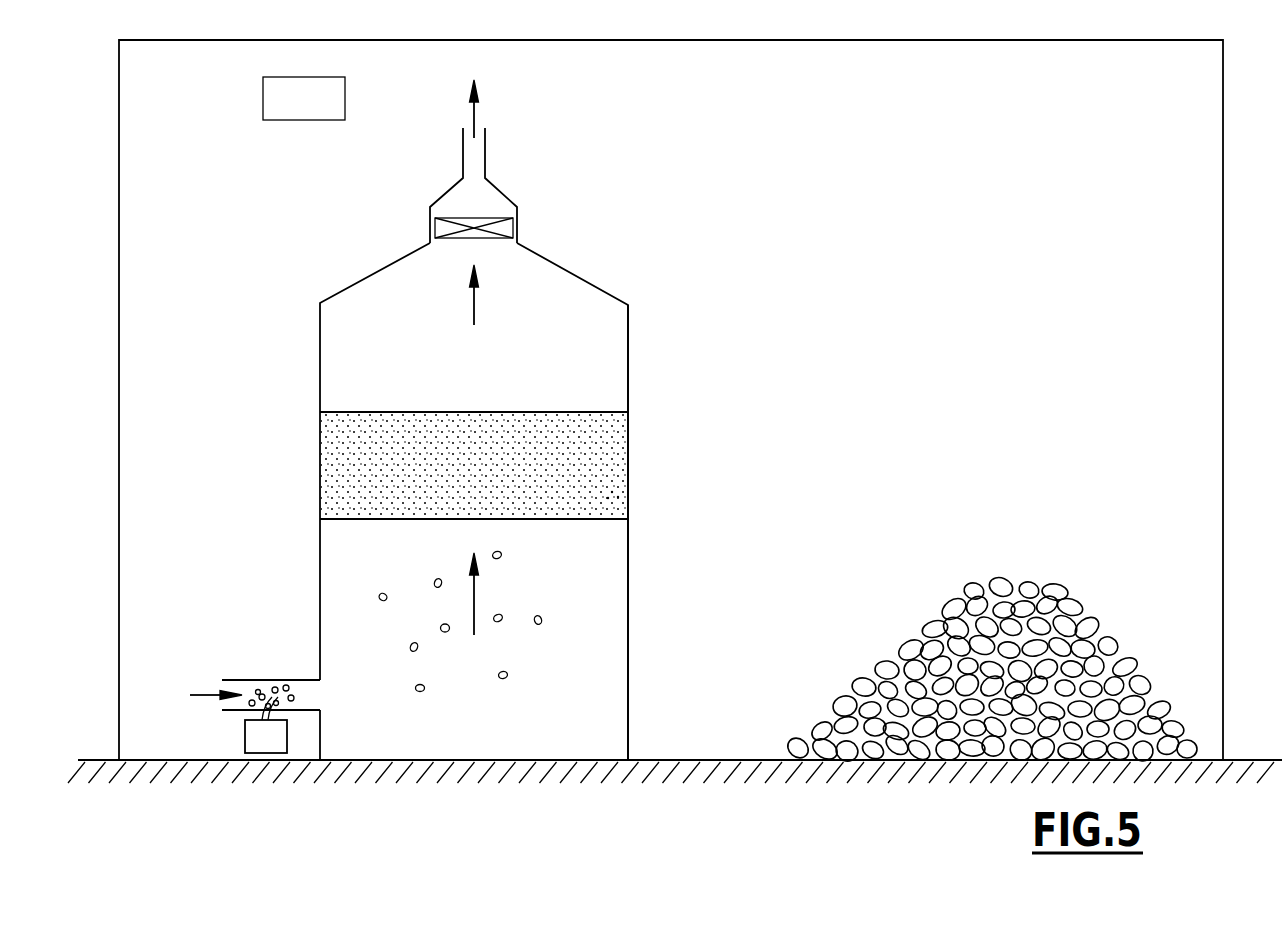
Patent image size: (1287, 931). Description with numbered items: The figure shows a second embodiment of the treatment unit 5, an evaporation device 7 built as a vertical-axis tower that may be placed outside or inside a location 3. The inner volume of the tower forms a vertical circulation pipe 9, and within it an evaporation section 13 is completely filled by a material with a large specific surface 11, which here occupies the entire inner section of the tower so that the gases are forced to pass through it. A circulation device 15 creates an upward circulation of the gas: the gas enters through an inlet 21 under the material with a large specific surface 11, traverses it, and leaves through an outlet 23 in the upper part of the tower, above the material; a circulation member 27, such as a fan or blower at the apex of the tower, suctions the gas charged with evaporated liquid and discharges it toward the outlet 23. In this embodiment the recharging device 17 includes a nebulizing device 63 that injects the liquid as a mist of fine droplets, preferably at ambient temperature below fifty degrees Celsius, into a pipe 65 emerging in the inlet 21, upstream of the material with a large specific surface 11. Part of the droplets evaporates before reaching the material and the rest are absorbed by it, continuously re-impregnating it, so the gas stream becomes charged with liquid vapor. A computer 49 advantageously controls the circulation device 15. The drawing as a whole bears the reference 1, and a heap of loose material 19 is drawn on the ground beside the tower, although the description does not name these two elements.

The installation 1 is at (252, 189).
The location 3 is at (1225, 175).
The treatment unit 5 is at (286, 297).
The evaporation device 7 is at (637, 310).
The circulation pipe 9 is at (588, 562).
The material with a large specific surface 11 is at (607, 460).
The evaporation section 13 is at (624, 487).
The circulation device 15 is at (523, 228).
The recharging device 17 is at (264, 758).
The pile of material 19 is at (1038, 578).
The inlet 21 is at (315, 684).
The outlet 23 is at (465, 158).
The circulation member 27 is at (433, 223).
The computer 49 is at (304, 98).
The nebulizing device 63 is at (245, 745).
The pipe 65 is at (247, 680).